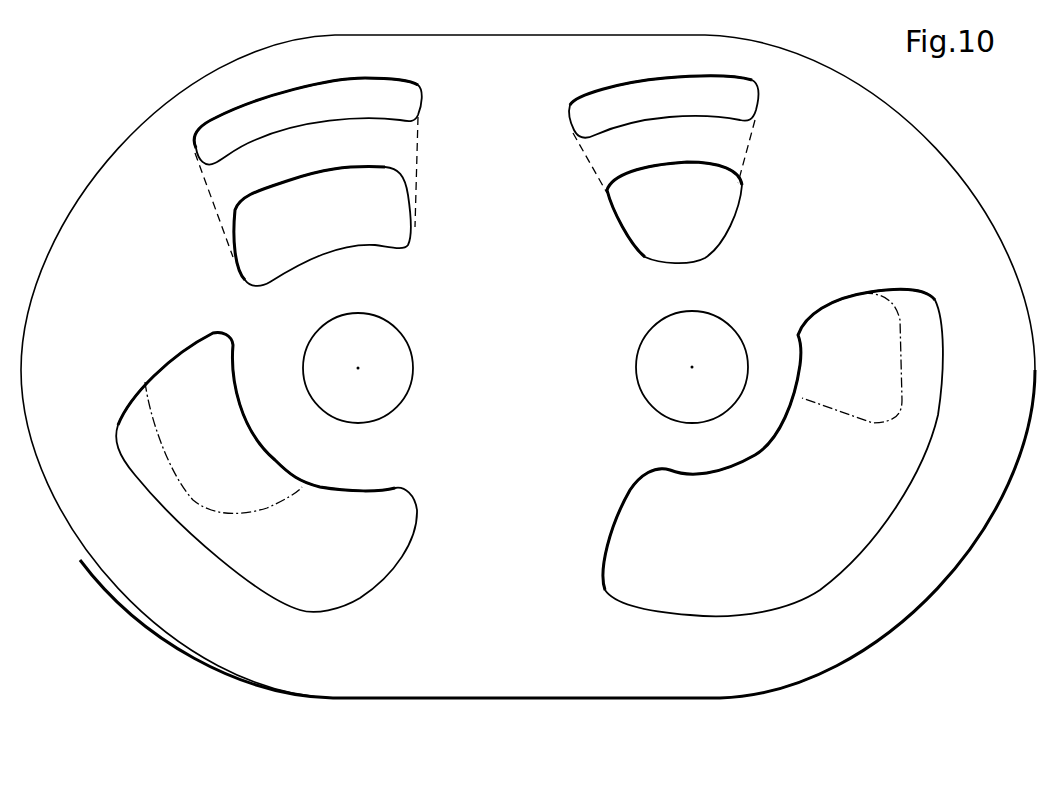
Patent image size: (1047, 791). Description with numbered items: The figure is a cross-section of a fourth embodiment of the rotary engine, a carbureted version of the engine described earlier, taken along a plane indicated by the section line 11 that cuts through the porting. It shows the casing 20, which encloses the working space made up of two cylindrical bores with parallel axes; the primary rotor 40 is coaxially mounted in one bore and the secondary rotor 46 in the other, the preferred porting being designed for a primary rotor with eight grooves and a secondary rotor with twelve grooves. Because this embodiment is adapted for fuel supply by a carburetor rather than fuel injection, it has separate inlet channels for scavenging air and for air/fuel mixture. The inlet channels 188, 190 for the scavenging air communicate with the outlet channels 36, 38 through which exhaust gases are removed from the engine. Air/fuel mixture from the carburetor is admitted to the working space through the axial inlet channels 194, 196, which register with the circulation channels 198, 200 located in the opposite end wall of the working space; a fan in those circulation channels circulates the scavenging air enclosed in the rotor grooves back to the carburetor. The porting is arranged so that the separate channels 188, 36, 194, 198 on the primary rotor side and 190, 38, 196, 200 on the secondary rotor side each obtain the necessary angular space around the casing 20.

The casing 20 is at (962, 198).
The section line 11- 11 is at (282, 68).
The outlet channel 36 is at (263, 580).
The outlet channel 38 is at (797, 572).
The primary rotor 40 is at (393, 355).
The secondary rotor 46 is at (652, 380).
The inlet channel for scavenging air 188 is at (183, 373).
The inlet channel for scavenging air 190 is at (850, 322).
The axial inlet channel 194 is at (393, 222).
The axial inlet channel 196 is at (653, 240).
The circulation channel 198 is at (210, 142).
The circulation channel 200 is at (745, 103).